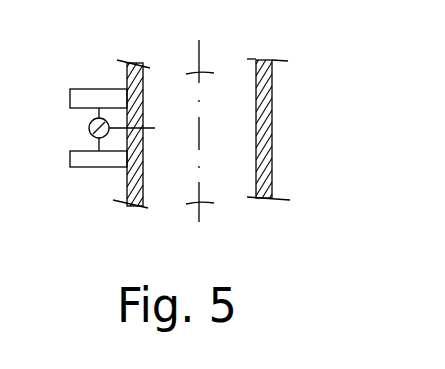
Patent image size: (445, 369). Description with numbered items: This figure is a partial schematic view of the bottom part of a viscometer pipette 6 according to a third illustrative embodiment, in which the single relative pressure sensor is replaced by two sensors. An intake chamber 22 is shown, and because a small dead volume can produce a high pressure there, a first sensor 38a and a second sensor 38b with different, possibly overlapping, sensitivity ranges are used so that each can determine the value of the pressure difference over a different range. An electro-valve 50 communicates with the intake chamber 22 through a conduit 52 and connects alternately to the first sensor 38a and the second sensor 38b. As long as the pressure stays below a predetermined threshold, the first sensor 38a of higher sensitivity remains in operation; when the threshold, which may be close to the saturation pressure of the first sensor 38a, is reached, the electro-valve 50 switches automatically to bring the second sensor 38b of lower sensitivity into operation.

The device 6 is at (304, 69).
The intake chamber 22 is at (262, 110).
The first sensor 38a is at (92, 89).
The second sensor 38b is at (93, 168).
The electro-valve 50 is at (88, 123).
The conduit 52 is at (145, 113).